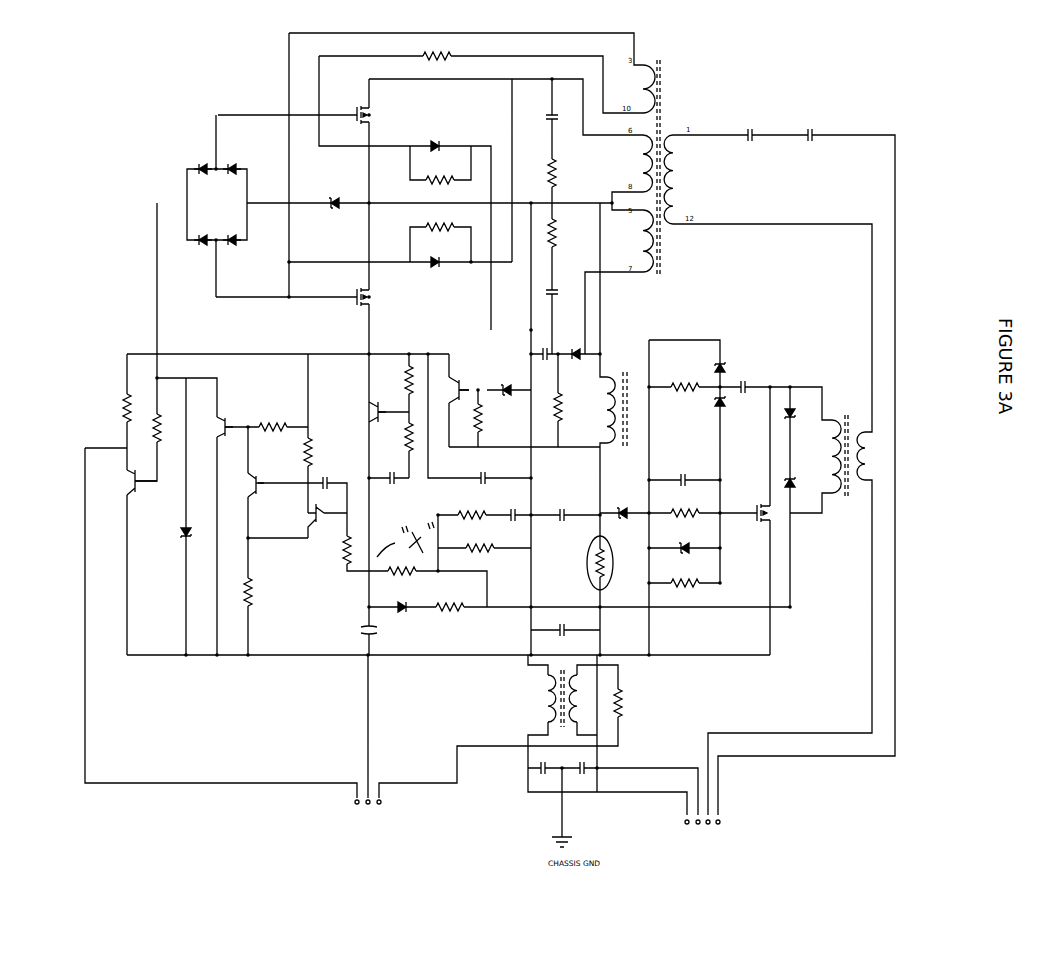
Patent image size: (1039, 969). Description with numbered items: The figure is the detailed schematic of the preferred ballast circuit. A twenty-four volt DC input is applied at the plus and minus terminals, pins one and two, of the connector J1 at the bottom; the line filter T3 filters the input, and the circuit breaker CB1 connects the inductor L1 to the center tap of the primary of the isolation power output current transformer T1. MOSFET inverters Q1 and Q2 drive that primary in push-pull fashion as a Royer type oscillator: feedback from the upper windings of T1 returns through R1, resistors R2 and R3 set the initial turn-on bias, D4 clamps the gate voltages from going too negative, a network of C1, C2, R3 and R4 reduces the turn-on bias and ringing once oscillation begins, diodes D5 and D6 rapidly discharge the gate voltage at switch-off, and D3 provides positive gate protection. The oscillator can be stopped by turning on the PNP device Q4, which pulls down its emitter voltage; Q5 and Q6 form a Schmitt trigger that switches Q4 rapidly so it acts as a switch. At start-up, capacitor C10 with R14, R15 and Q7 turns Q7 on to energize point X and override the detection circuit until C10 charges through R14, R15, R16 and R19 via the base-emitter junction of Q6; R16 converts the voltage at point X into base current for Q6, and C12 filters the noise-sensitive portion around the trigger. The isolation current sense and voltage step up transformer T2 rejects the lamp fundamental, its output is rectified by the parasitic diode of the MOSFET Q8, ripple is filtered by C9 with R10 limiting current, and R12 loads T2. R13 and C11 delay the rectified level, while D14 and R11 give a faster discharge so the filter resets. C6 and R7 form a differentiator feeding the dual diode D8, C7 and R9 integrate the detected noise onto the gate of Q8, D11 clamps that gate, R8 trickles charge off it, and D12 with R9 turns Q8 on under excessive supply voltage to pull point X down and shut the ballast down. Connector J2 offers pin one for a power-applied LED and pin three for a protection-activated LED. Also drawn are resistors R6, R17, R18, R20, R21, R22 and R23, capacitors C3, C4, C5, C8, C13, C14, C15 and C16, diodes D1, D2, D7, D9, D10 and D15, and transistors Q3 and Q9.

The feedback resistor R1 is at (437, 51).
The turn-on bias resistor R2 is at (440, 175).
The turn-on bias resistor R3 is at (440, 222).
The resistor R4 is at (559, 173).
The resistor R6 is at (565, 407).
The differentiator resistor R7 is at (684, 382).
The gate discharge resistor R8 is at (623, 403).
The integrator resistor R9 is at (683, 508).
The current limiting resistor R10 is at (472, 509).
The discharge resistor R11 is at (450, 601).
The loading resistor R12 is at (480, 542).
The time delay resistor R13 is at (401, 566).
The resistor R14 is at (399, 437).
The resistor R15 is at (399, 380).
The resistor R16 is at (337, 550).
The resistor R17 is at (317, 452).
The resistor R18 is at (273, 421).
The resistor R19 is at (257, 592).
The resistor R20 is at (166, 428).
The resistor R21 is at (136, 408).
The resistor R22 is at (626, 703).
The resistor R23 is at (487, 418).
The capacitor C1 is at (558, 117).
The capacitor C2 is at (558, 292).
The capacitor C3 is at (545, 347).
The capacitor C4 is at (750, 130).
The capacitor C5 is at (810, 130).
The differentiating capacitor C6 is at (743, 381).
The integrator capacitor C7 is at (683, 475).
The capacitor C8 is at (562, 510).
The filter capacitor C9 is at (513, 510).
The capacitor C10 is at (391, 487).
The time delay capacitor C11 is at (377, 632).
The filter capacitor C12 is at (482, 472).
The capacitor C13 is at (326, 477).
The capacitor C14 is at (561, 625).
The capacitor C15 is at (542, 775).
The capacitor C16 is at (581, 775).
The diode D1 (1N914B) D1 is at (217, 198).
The diode D2 (1N914B) D2 is at (217, 232).
The gate protection diode D3 is at (165, 536).
The clamp diode D4 is at (335, 205).
The gate discharge diode D5 is at (438, 147).
The gate discharge diode D6 is at (438, 262).
The diode D7 (BYV96E) D7 is at (581, 353).
The dual diode D8 is at (703, 380).
The zener diode D9 (BZT52C51) D9 is at (799, 397).
The zener diode D10 (BZT52C51) D10 is at (808, 501).
The gate clamp diode D11 is at (677, 549).
The overvoltage protection diode D12 is at (628, 515).
The discharge diode D14 is at (407, 608).
The zener diode D15 (BZT52C27) D15 is at (504, 390).
The inverter MOSFET Q1 is at (387, 113).
The inverter MOSFET Q2 is at (387, 296).
The transistor Q3 (MPSA06) Q3 is at (151, 481).
The PNP transistor Q4 is at (233, 417).
The Schmitt trigger transistor Q5 is at (264, 489).
The Schmitt trigger transistor Q6 is at (291, 521).
The transistor Q7 is at (361, 414).
The MOSFET Q8 is at (748, 505).
The transistor Q9 (MPSA06) Q9 is at (464, 382).
The isolation power output current transformer T1 is at (664, 168).
The isolation current sense and voltage step up transformer T2 is at (848, 455).
The line filter T3 is at (562, 691).
The inductor L1 is at (620, 406).
The circuit breaker CB1 is at (607, 563).
The input connector J1 is at (725, 838).
The indicator connector J2 is at (364, 823).